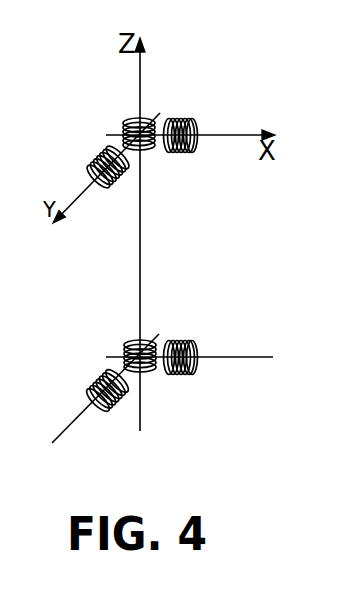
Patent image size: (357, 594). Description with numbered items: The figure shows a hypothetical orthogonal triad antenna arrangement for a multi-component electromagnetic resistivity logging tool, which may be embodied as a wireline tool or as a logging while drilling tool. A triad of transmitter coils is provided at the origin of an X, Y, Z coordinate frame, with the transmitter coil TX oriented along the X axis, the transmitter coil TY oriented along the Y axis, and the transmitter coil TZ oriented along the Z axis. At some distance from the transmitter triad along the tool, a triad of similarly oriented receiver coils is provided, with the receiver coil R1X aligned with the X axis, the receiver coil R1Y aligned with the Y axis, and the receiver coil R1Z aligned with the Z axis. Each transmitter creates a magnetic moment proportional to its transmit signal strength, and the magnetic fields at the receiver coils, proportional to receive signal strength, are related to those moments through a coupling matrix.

The transmitter coil TZ is at (128, 122).
The transmitter coil TX is at (187, 124).
The transmitter coil TY is at (108, 182).
The receiver coil R1Z is at (129, 341).
The receiver coil R1X is at (192, 346).
The receiver coil R1Y is at (95, 390).